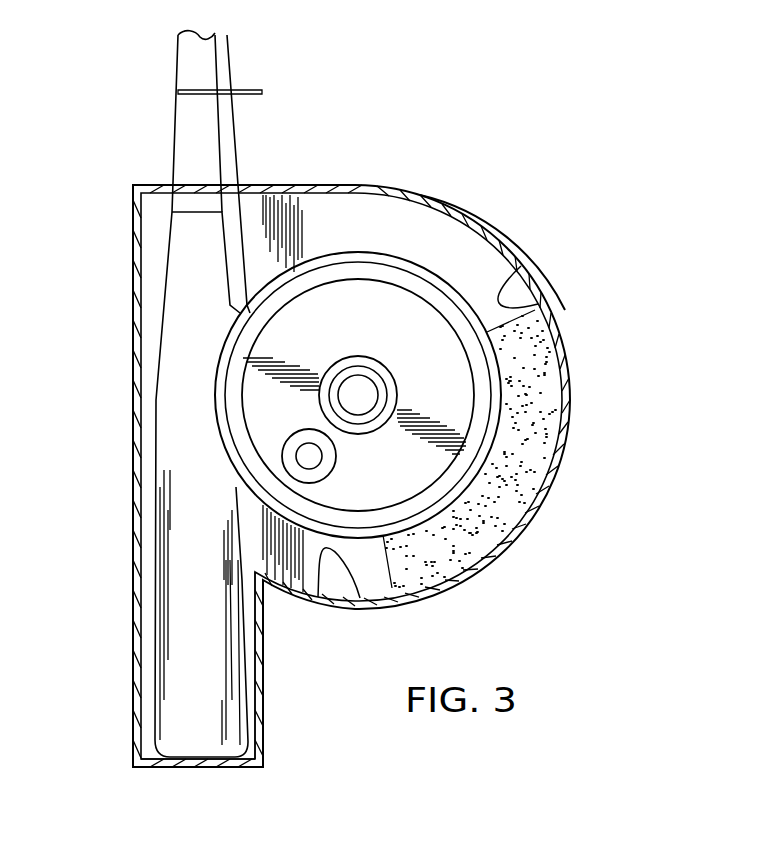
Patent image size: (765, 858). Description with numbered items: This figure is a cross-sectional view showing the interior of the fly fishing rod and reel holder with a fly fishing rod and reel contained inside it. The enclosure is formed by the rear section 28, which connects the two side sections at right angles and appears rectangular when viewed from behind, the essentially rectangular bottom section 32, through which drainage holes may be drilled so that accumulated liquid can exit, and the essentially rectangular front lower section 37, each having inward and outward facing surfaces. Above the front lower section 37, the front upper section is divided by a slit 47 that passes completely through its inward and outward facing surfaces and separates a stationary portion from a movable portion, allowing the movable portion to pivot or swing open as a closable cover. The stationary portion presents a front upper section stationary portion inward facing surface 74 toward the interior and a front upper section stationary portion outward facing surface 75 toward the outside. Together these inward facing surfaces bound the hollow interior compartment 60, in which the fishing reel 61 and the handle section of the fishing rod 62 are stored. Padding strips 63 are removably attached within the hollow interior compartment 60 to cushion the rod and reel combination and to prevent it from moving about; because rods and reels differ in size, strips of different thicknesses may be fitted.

The rear section 28 is at (133, 603).
The bottom section 32 is at (215, 768).
The front lower section 37 is at (264, 685).
The slit 47 is at (518, 268).
The hollow interior compartment 60 is at (347, 242).
The fishing reel 61 is at (372, 341).
The handle section of the fishing rod 62 is at (204, 452).
The padding strips 63 is at (530, 373).
The front upper section stationary portion inward facing surface 74 is at (503, 290).
The front upper section stationary portion outward facing surface 75 is at (572, 396).